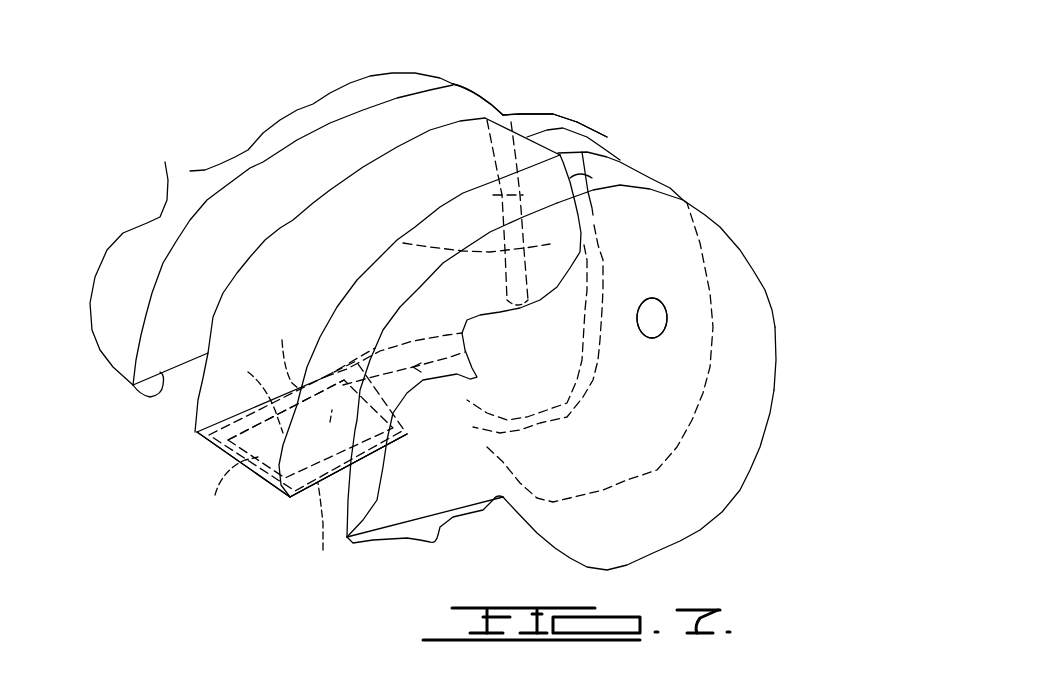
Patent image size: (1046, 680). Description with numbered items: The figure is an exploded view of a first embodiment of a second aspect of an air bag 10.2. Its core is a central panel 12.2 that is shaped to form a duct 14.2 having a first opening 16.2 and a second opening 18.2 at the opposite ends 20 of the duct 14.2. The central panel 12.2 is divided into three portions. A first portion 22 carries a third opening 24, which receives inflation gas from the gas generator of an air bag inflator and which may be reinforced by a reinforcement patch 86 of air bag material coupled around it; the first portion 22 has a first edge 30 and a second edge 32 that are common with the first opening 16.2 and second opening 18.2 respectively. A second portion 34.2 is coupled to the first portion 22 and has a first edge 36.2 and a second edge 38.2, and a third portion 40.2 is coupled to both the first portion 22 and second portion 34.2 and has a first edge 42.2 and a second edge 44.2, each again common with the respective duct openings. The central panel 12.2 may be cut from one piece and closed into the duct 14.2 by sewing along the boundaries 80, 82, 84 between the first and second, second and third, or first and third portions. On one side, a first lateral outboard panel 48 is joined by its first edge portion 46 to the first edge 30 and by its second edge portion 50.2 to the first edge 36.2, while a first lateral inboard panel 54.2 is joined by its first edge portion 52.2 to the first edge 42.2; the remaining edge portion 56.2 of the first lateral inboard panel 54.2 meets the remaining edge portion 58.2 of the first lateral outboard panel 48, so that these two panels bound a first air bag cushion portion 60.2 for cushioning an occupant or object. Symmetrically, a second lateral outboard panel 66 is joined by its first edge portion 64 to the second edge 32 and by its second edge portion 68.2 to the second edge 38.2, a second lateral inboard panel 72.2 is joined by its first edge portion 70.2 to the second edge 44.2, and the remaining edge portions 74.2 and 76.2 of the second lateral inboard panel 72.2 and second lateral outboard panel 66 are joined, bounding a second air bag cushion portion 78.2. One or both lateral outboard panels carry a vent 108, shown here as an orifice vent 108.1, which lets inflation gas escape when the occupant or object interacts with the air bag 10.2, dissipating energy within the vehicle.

The air bag 10.2 is at (243, 77).
The central panel 12.2 is at (378, 296).
The duct 14.2 is at (185, 492).
The first opening 16.2 is at (282, 510).
The second opening 18.2 is at (172, 438).
The opposite ends 20 is at (246, 482).
The first portion 22 is at (317, 545).
The third opening 24 is at (257, 389).
The first edge 30 is at (297, 500).
The second edge 32 is at (283, 349).
The second portion 34.2 is at (250, 263).
The first edge 36.2 is at (290, 497).
The second edge 38.2 is at (227, 298).
The third portion 40.2 is at (397, 240).
The first edge 42.2 is at (593, 177).
The second edge 44.2 is at (493, 287).
The first edge portion 46 is at (434, 544).
The first lateral outboard panel 48 is at (775, 389).
The second edge portion 50.2 is at (477, 378).
The first edge portion 52.2 is at (545, 440).
The first lateral inboard panel 54.2 is at (670, 185).
The remaining edge portion 56.2 is at (621, 160).
The remaining edge portion 58.2 is at (775, 328).
The first air bag cushion portion 60.2 is at (763, 483).
The first edge portion 64 is at (133, 385).
The second lateral outboard panel 66 is at (480, 82).
The second edge portion 68.2 is at (190, 171).
The first edge portion 70.2 is at (497, 193).
The second lateral inboard panel 72.2 is at (577, 122).
The remaining edge portion 74.2 is at (540, 113).
The remaining edge portion 76.2 is at (453, 83).
The second air bag cushion portion 78.2 is at (547, 67).
The boundary 80 is at (240, 462).
The boundary 82 is at (607, 137).
The boundary 84 is at (286, 416).
The reinforcement patch 86 is at (227, 487).
The vent 108 is at (663, 328).
The orifice vent 108.1 is at (705, 352).